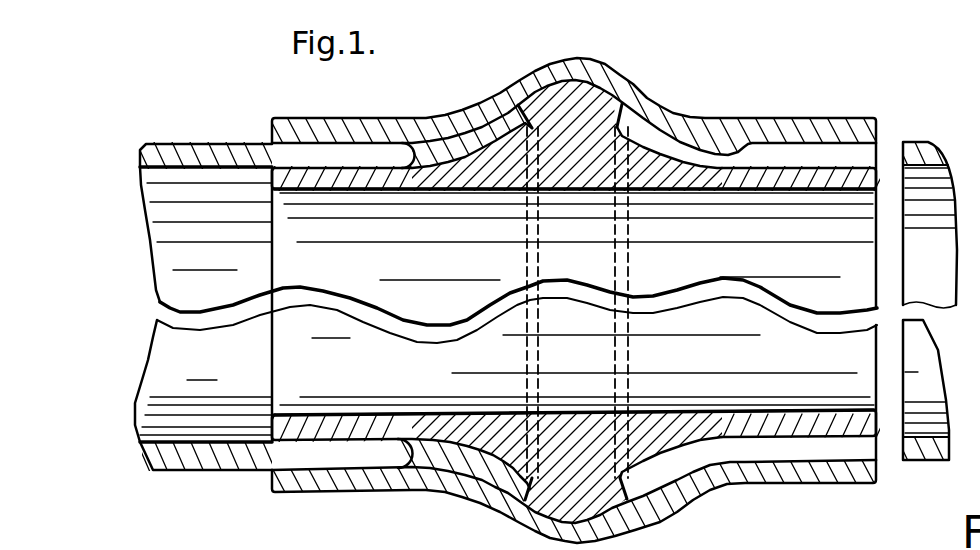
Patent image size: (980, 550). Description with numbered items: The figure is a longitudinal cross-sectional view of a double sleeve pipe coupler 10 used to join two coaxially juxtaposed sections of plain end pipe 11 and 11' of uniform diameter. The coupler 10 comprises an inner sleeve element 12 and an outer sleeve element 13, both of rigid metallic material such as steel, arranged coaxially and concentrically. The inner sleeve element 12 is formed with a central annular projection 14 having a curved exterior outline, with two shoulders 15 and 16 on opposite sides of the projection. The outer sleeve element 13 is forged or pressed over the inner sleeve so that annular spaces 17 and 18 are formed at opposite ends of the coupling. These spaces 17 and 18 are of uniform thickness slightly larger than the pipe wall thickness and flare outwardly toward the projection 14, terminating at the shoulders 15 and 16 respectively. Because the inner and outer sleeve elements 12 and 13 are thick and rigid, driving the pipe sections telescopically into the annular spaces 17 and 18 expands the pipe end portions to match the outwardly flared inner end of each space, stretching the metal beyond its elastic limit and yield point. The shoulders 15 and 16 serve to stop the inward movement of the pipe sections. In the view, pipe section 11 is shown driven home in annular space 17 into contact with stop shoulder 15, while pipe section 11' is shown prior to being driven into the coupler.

The pipe coupler 10 is at (698, 107).
The pipe section 11 is at (205, 281).
The pipe section 11' is at (938, 278).
The inner sleeve element 12 is at (879, 160).
The outer sleeve element 13 is at (796, 118).
The central annular projection 14 is at (594, 92).
The shoulder 15 is at (502, 108).
The shoulder 16 is at (652, 122).
The annular space 17 is at (270, 148).
The annular space 18 is at (744, 142).